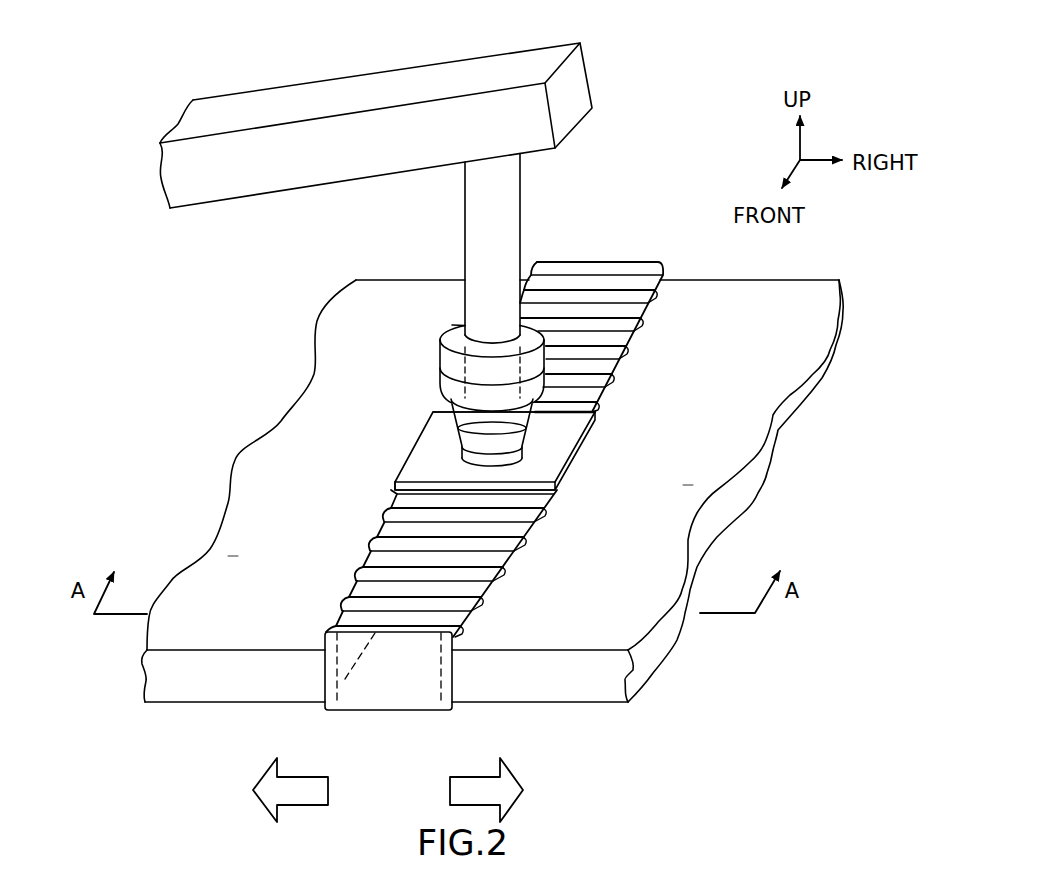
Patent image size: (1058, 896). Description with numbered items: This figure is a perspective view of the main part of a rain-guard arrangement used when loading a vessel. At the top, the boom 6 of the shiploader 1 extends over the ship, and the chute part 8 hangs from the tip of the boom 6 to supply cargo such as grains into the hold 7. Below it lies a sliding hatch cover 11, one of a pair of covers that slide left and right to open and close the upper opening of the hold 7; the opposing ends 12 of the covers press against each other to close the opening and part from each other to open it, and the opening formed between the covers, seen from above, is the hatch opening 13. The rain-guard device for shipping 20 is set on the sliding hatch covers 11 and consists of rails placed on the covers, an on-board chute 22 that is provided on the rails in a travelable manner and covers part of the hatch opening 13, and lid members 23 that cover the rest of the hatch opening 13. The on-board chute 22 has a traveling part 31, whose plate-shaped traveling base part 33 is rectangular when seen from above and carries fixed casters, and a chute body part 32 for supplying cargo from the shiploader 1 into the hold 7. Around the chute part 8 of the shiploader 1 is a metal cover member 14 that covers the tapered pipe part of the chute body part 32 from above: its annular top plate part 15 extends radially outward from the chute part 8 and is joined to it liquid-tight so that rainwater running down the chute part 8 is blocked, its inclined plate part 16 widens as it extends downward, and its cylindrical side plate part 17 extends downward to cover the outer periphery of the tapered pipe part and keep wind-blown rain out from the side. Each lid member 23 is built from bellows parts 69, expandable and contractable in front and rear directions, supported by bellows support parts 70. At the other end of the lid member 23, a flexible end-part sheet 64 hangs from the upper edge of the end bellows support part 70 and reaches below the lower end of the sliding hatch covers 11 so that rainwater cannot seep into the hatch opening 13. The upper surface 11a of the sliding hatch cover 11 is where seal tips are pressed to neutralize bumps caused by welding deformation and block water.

The shiploader 1 is at (283, 57).
The boom 6 is at (388, 83).
The hold 7 is at (463, 757).
The chute part 8 is at (520, 174).
The sliding hatch cover 11 is at (244, 500).
The upper surface of sliding hatch cover 11a is at (233, 556).
The opposing end 12 is at (338, 683).
The hatch opening 13 is at (386, 723).
The cover member 14 is at (438, 320).
The top plate part 15 is at (462, 323).
The inclined plate part 16 is at (442, 343).
The side plate part 17 is at (440, 378).
The rain-guard device for shipping 20 is at (639, 228).
The on-board chute 22 is at (596, 457).
The lid member 23 is at (632, 365).
The traveling part 31 is at (404, 451).
The chute body part 32 is at (446, 430).
The traveling base part 33 is at (408, 476).
The end-part sheet 64 is at (330, 712).
The bellows part 69 is at (650, 302).
The bellows support part 70 is at (663, 280).